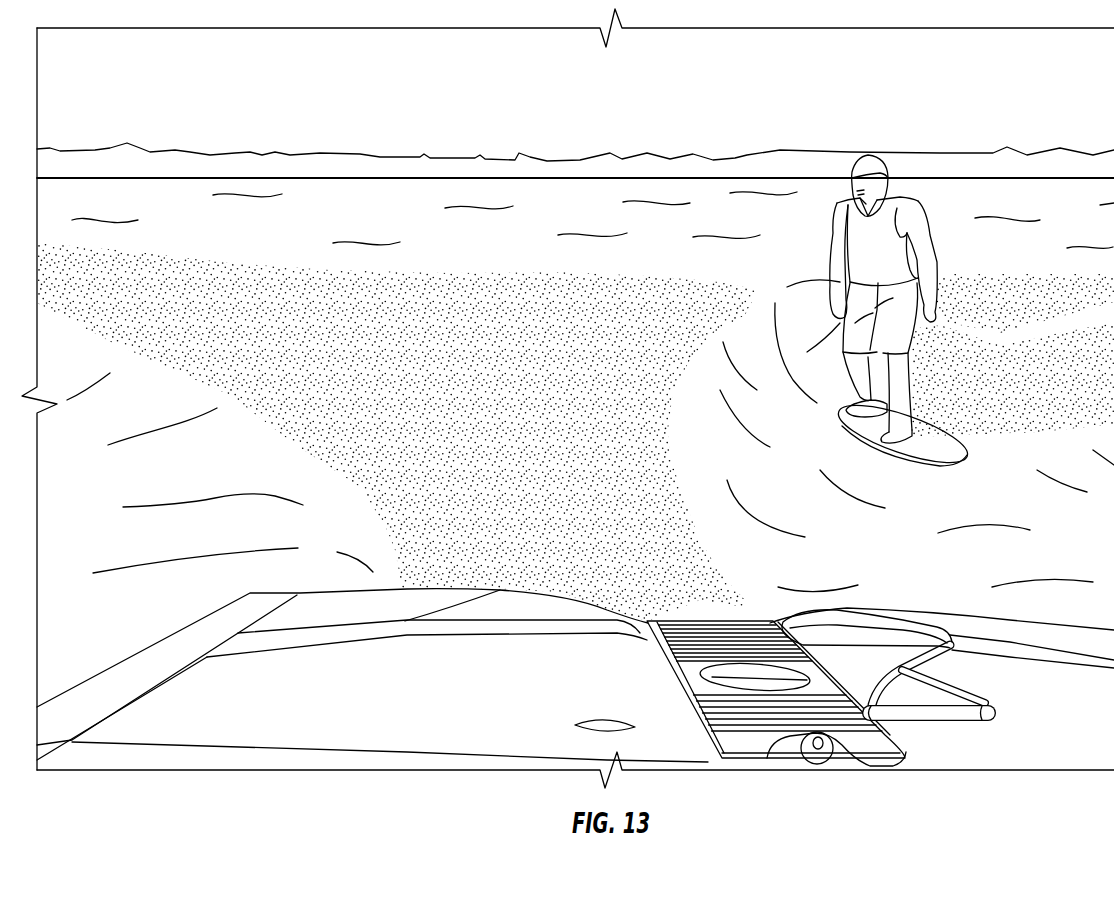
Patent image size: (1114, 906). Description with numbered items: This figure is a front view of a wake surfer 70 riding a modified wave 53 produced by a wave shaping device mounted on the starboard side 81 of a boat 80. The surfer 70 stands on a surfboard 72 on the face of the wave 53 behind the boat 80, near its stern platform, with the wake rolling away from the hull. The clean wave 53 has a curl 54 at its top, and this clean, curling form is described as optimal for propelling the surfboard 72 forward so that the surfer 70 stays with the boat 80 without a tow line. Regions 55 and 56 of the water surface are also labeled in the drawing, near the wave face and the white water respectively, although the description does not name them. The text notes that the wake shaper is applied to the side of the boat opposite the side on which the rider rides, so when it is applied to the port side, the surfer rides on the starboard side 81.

The modified wave 53 is at (727, 456).
The curl 54 is at (747, 330).
The wave crest 55 is at (792, 416).
The whitewater foam 56 is at (448, 343).
The wake surfer 70 is at (868, 248).
The surfboard 72 is at (935, 451).
The boat 80 is at (375, 693).
The starboard side 81 is at (202, 636).